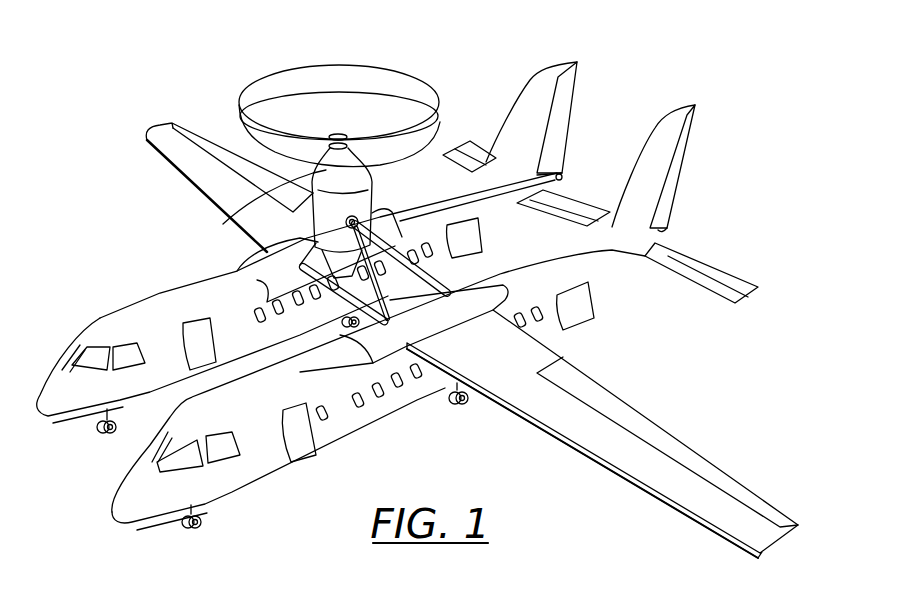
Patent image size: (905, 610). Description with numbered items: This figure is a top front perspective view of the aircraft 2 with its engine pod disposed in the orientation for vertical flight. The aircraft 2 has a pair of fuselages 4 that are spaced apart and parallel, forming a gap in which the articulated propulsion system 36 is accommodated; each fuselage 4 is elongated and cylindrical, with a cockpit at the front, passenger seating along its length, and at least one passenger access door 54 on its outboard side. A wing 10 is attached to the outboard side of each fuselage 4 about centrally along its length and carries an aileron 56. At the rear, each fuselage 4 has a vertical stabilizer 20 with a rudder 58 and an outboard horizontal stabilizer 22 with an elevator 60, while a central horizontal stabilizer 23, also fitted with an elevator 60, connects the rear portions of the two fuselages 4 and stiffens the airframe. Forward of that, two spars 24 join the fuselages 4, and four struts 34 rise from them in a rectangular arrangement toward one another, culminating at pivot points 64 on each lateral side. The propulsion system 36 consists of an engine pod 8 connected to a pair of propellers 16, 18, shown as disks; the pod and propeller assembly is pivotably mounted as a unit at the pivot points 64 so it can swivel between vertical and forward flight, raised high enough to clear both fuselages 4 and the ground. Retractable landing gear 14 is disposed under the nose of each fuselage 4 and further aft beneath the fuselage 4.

The aircraft 2 is at (700, 333).
The fuselage 4 is at (152, 308).
The engine pod 8 is at (236, 222).
The wing 10 is at (180, 160).
The landing gear 14 is at (96, 429).
The propeller 16 is at (244, 135).
The propeller 18 is at (344, 75).
The vertical stabilizer 20 is at (549, 66).
The horizontal stabilizer 22 is at (452, 150).
The central horizontal stabilizer 23 is at (560, 218).
The spar 24 is at (453, 290).
The strut 34 is at (262, 250).
The articulated propulsion system 36 is at (383, 176).
The passenger access door 54 is at (578, 314).
The aileron 56 is at (188, 123).
The rudder 58 is at (563, 98).
The elevator 60 is at (478, 150).
The pivot point 64 is at (372, 212).